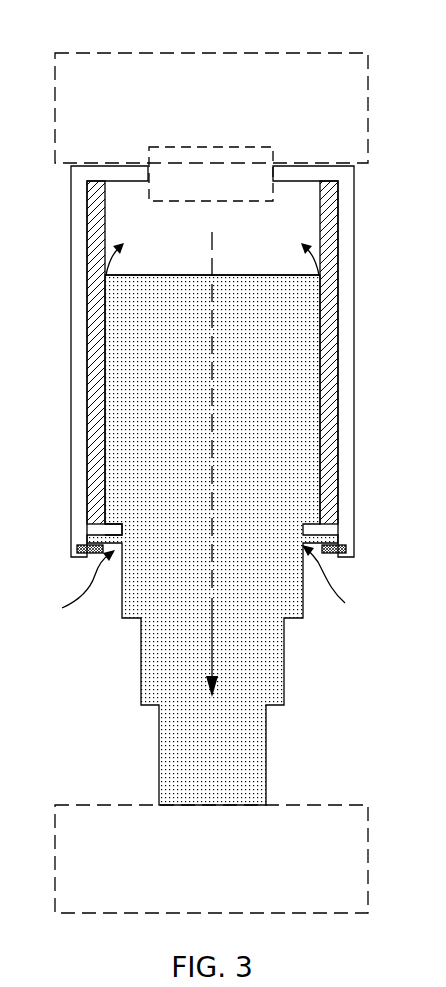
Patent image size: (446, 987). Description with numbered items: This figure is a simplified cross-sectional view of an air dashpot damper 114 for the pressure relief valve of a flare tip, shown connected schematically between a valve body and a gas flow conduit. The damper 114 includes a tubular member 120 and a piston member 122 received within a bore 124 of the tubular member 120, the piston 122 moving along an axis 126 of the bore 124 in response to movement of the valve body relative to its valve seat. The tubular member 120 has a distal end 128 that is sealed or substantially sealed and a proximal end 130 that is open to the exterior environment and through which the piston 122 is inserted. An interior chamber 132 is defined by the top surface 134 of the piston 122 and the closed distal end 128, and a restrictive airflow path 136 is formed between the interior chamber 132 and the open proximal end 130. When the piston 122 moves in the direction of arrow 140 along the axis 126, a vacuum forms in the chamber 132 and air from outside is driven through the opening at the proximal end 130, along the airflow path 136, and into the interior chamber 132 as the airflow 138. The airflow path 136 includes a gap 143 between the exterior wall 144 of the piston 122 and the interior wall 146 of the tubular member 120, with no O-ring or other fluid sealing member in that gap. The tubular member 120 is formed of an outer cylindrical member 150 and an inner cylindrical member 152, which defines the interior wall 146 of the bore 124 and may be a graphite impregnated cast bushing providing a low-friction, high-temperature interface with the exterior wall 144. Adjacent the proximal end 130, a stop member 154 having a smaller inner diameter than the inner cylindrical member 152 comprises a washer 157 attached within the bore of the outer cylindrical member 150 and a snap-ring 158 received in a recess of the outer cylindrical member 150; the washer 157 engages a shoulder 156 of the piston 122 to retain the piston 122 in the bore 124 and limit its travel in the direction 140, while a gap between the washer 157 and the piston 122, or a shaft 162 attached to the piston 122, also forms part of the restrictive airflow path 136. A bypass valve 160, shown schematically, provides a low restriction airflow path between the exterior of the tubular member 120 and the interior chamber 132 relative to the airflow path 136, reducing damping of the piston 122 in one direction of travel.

The air dashpot damper 114 is at (366, 26).
The tubular member 120 is at (349, 357).
The piston member 122 is at (308, 330).
The bore 124 is at (113, 229).
The axis 126 is at (217, 385).
The distal end 128 is at (77, 203).
The proximal end 130 is at (77, 524).
The interior chamber 132 is at (308, 195).
The top surface 134 is at (195, 273).
The restrictive airflow path 136 is at (321, 397).
The airflow 138 is at (113, 258).
The direction 140 is at (213, 650).
The gap 143 is at (321, 437).
The exterior wall 144 is at (97, 445).
The interior wall 146 is at (113, 405).
The outer cylindrical member 150 is at (350, 252).
The inner cylindrical member 152 is at (92, 358).
The stop member 154 is at (70, 572).
The shoulder 156 is at (119, 526).
The washer 157 is at (333, 534).
The snap-ring 158 is at (77, 551).
The bypass valve 160 is at (273, 146).
The shaft 162 is at (153, 670).